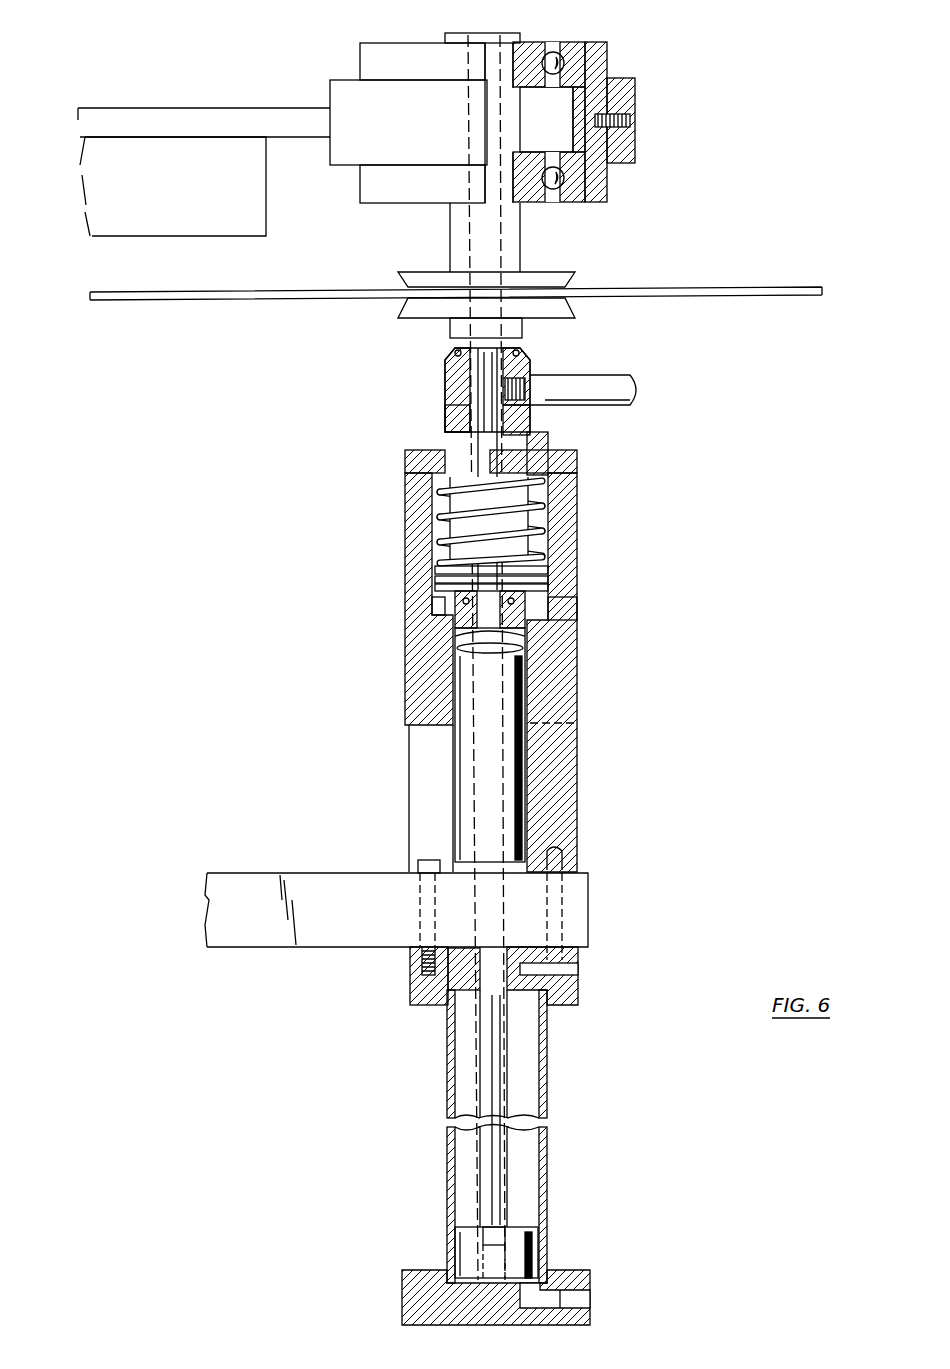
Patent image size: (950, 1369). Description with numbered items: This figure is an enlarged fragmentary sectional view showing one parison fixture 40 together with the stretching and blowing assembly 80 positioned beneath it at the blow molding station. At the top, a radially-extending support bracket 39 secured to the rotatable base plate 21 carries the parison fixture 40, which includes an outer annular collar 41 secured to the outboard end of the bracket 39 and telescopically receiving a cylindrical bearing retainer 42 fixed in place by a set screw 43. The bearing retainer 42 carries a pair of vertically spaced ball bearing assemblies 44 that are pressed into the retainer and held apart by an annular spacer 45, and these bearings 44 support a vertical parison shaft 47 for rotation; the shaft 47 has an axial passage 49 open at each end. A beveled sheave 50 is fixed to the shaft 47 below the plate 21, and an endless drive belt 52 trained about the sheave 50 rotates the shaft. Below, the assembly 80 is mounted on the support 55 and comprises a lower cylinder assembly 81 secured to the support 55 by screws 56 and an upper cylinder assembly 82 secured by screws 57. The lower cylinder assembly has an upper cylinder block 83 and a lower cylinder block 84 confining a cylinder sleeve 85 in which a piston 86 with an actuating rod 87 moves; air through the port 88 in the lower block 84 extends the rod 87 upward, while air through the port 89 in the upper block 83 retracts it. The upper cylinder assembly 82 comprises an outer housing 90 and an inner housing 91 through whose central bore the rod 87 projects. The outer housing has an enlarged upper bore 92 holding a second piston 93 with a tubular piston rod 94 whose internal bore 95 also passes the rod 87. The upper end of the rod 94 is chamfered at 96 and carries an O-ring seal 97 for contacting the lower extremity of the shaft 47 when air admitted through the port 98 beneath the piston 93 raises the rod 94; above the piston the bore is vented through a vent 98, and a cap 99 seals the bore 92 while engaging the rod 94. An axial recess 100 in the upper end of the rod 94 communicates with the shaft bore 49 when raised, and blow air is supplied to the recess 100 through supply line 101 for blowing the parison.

The base plate 21 is at (158, 190).
The support bracket 39 is at (272, 112).
The parison fixture 40 is at (616, 46).
The outer annular collar 41 is at (638, 95).
The cylindrical bearing retainer 42 is at (606, 181).
The set screw 43 is at (633, 121).
The ball bearing assemblies 44 is at (543, 95).
The annular spacer 45 is at (578, 140).
The vertical parison shaft 47 is at (521, 240).
The axial passage 49 is at (470, 226).
The beveled sheave 50 is at (416, 280).
The endless drive belt 52 is at (268, 300).
The support 55 is at (229, 885).
The screws 56 is at (425, 862).
The screws 57 is at (558, 893).
The stretching and blowing assembly 80 is at (604, 660).
The lower cylinder assembly 81 is at (557, 1045).
The upper cylinder assembly 82 is at (586, 779).
The upper cylinder block 83 is at (570, 996).
The lower cylinder block 84 is at (578, 1275).
The cylinder sleeve 85 is at (548, 1160).
The piston 86 is at (465, 1248).
The actuating rod 87 is at (487, 388).
The port 88 is at (576, 1302).
The port 89 is at (572, 968).
The outer housing 90 is at (562, 703).
The inner housing 91 is at (468, 767).
The enlarged upper bore 92 is at (547, 508).
The second piston 93 is at (447, 568).
The tubular piston rod 94 is at (545, 418).
The internal bore 95 is at (450, 418).
The chamfer 96 is at (452, 352).
The O-ring seal 97 is at (530, 352).
The port 98 is at (548, 445).
The cap 99 is at (580, 465).
The axial recess 100 is at (447, 367).
The supply line 101 is at (628, 386).